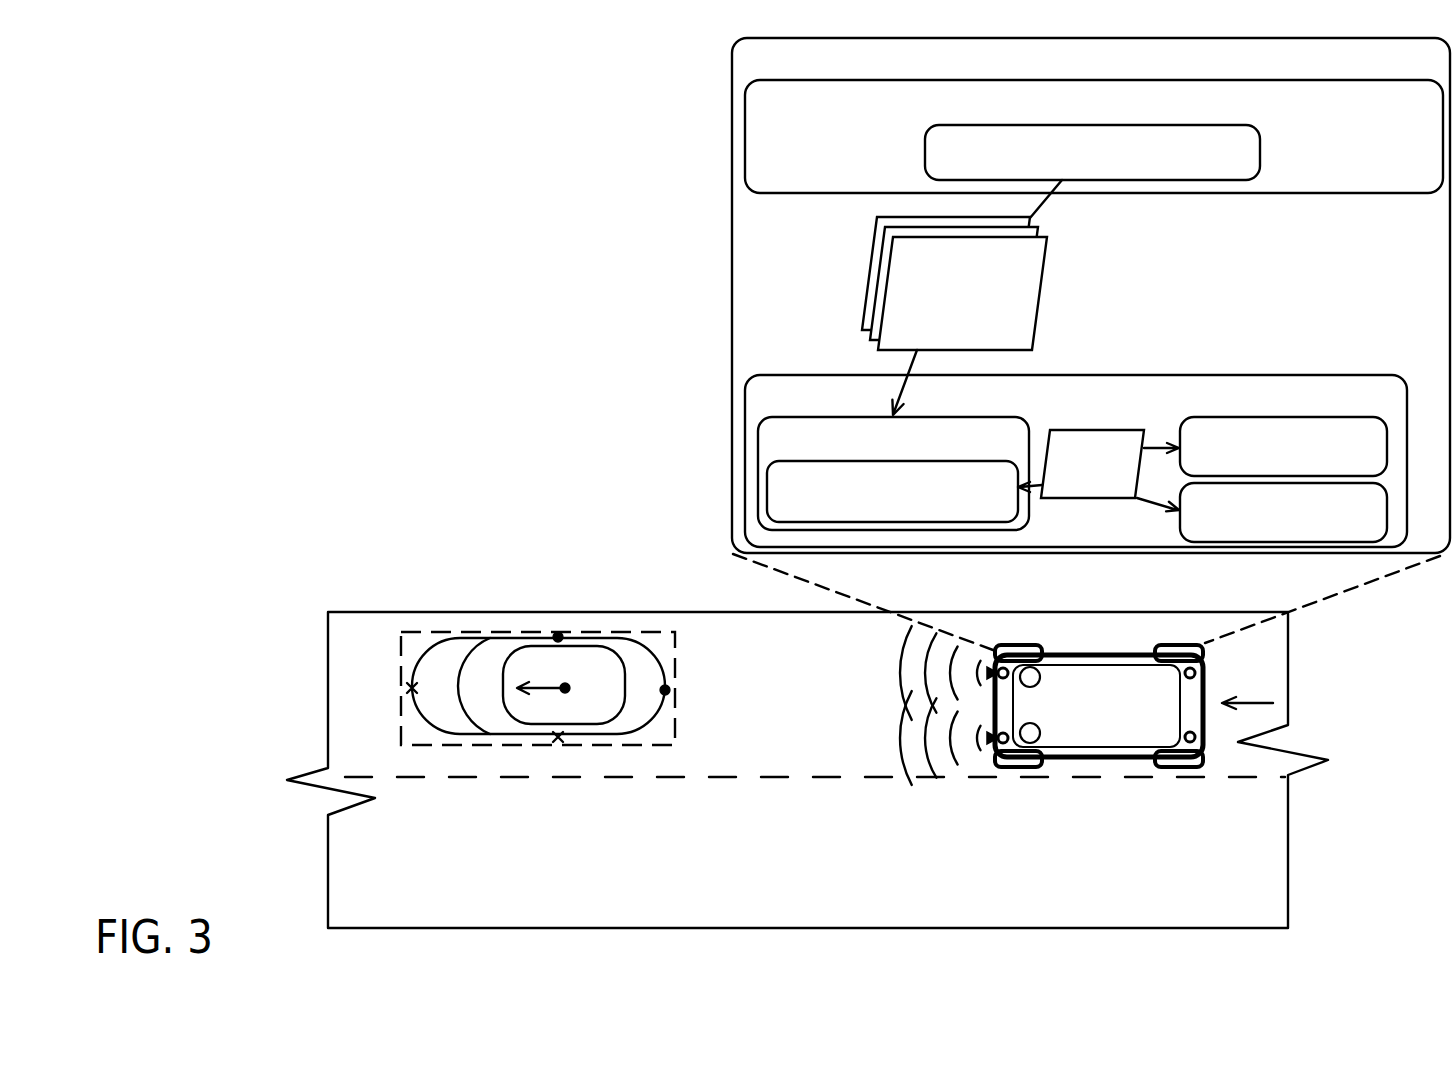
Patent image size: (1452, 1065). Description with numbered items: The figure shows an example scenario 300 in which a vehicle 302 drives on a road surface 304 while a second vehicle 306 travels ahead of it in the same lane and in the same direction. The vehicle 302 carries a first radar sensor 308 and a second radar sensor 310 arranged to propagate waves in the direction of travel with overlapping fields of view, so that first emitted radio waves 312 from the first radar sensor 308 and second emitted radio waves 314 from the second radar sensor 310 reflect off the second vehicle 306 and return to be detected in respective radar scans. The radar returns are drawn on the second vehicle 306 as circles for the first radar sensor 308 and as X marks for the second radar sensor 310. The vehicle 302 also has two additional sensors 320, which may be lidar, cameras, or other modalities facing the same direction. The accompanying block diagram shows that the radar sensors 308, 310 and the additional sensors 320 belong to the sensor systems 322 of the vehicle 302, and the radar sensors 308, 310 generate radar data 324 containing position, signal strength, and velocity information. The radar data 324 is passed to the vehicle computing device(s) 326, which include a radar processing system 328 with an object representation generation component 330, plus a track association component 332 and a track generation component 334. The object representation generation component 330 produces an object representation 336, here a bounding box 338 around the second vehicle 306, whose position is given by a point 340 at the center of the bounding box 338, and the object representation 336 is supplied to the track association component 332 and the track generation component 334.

The example scenario 300 is at (200, 70).
The vehicle 302 is at (1150, 74).
The road surface 304 is at (1247, 909).
The second vehicle 306 is at (510, 737).
The first radar sensor 308 is at (1215, 164).
The second radar sensor 310 is at (993, 742).
The first emitted radio waves 312 is at (898, 680).
The second emitted radio waves 314 is at (898, 733).
The additional sensors 320 is at (1036, 685).
The sensor systems 322 is at (1188, 115).
The radar data 324 is at (980, 318).
The vehicle computing device(s) 326 is at (1225, 411).
The radar processing system 328 is at (998, 452).
The object representation generation component 330 is at (967, 516).
The track association component 332 is at (1298, 473).
The track generation component 334 is at (1300, 537).
The object representation 336 is at (1110, 490).
The bounding box 338 is at (493, 745).
The point 340 is at (565, 688).